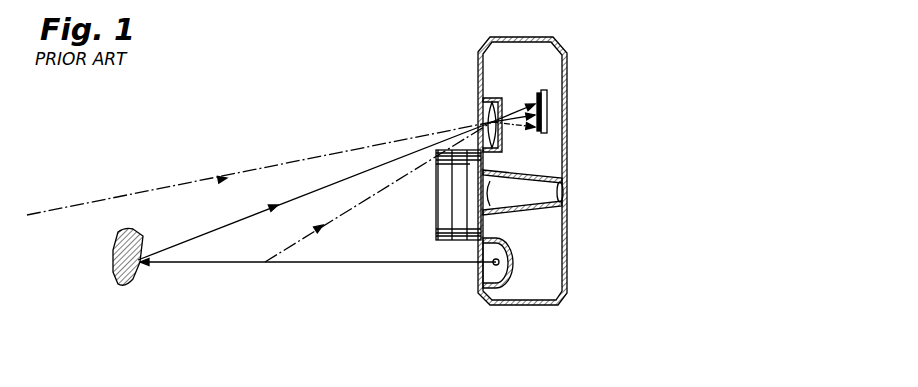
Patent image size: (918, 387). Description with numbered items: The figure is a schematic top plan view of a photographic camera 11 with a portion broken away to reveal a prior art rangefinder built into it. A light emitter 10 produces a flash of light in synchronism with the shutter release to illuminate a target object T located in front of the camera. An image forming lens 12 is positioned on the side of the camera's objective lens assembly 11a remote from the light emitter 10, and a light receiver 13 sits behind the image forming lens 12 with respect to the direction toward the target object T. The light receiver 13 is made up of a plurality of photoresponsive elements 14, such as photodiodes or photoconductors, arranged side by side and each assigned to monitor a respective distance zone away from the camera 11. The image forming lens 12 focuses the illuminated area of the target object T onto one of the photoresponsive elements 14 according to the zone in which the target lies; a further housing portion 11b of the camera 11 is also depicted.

The light emitter 10 is at (492, 263).
The photographic camera 11 is at (575, 129).
The objective lens assembly 11a is at (433, 226).
The hook-shaped housing portion 11b is at (513, 260).
The image forming lens 12 is at (481, 120).
The light receiver 13 is at (548, 100).
The photoresponsive elements 14 is at (536, 99).
The target object T is at (112, 263).